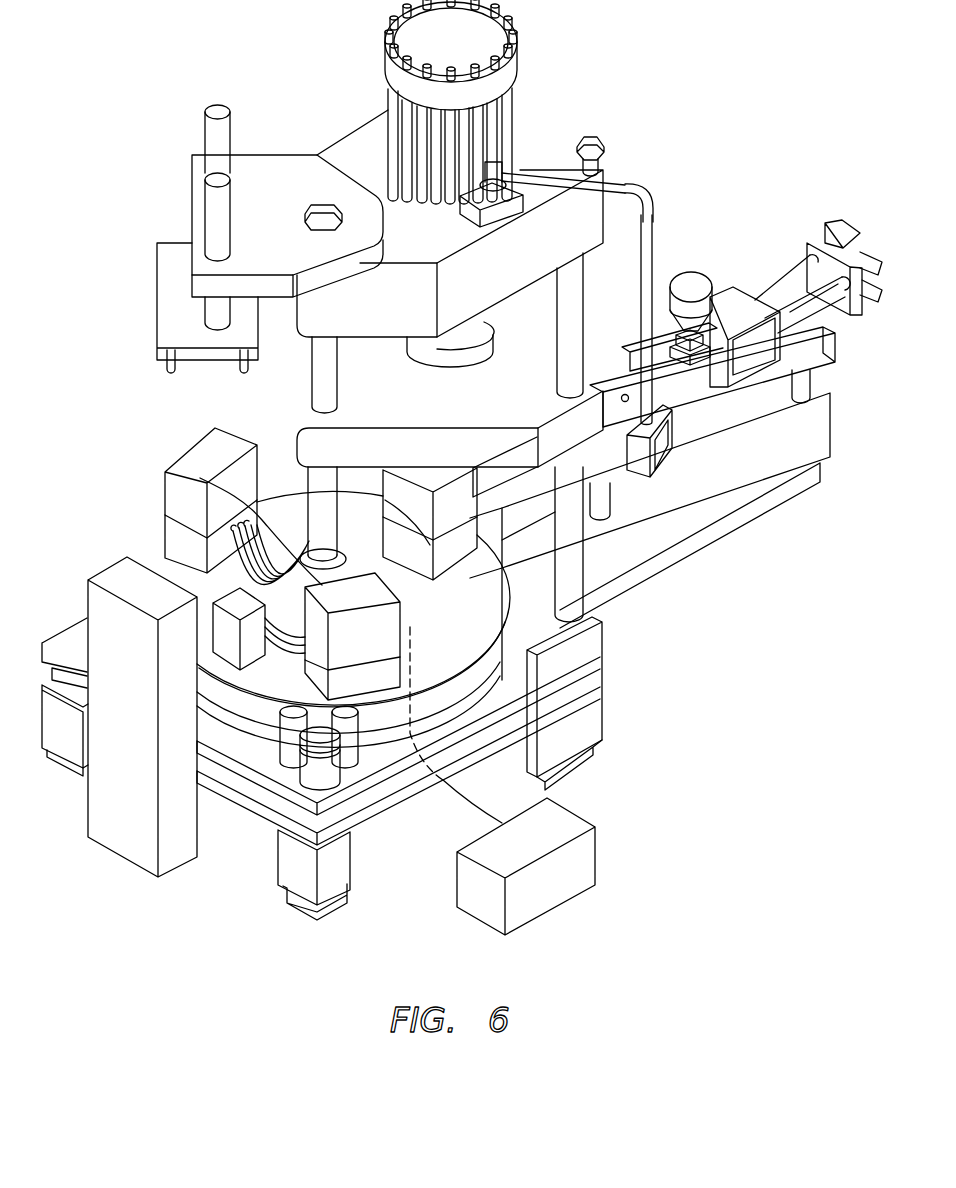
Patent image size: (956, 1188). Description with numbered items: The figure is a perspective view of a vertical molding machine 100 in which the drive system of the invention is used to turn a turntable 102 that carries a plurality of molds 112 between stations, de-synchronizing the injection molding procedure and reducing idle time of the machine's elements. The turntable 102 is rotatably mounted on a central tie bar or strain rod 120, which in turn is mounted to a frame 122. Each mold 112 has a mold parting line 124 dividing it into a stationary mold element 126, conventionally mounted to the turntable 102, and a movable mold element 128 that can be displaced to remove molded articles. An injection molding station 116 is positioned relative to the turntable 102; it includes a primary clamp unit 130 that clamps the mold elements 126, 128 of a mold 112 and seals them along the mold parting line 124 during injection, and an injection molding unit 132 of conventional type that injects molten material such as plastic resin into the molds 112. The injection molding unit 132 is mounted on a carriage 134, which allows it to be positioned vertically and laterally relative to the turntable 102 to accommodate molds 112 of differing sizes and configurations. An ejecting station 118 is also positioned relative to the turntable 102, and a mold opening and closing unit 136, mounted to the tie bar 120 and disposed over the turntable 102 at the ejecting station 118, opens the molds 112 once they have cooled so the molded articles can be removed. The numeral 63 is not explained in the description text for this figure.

The cooling tubes 63 is at (293, 530).
The vertical molding machine 100 is at (740, 196).
The turntable 102 is at (158, 555).
The molds 112 is at (203, 453).
The injection molding station 116 is at (852, 398).
The ejecting station 118 is at (142, 703).
The central tie bar 120 is at (325, 390).
The frame 122 is at (583, 713).
The mold parting line 124 is at (180, 527).
The stationary mold element 126 is at (438, 593).
The movable mold element 128 is at (448, 502).
The primary clamp unit 130 is at (565, 116).
The injection molding unit 132 is at (733, 297).
The carriage 134 is at (772, 407).
The mold opening and closing unit 136 is at (170, 328).